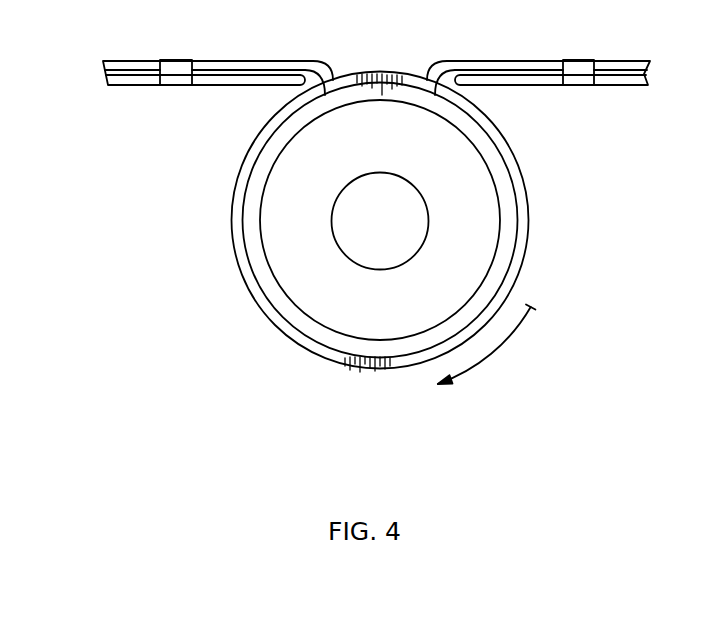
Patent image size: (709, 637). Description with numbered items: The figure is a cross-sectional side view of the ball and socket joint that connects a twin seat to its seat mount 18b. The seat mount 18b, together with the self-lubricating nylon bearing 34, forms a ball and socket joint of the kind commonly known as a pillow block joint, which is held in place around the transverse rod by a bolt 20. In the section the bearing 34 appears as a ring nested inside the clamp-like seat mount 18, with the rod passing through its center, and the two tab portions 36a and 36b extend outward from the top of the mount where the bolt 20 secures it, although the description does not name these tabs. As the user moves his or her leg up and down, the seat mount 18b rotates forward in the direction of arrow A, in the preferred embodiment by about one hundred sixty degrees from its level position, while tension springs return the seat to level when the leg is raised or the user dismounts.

The clamp band 18 is at (517, 273).
The seat mount 18b is at (337, 362).
The core member 20 is at (357, 228).
The self-lubricating nylon bearing 34 is at (293, 275).
The left flange 36a is at (165, 88).
The right flange 36b is at (585, 86).
The arrow A is at (492, 350).